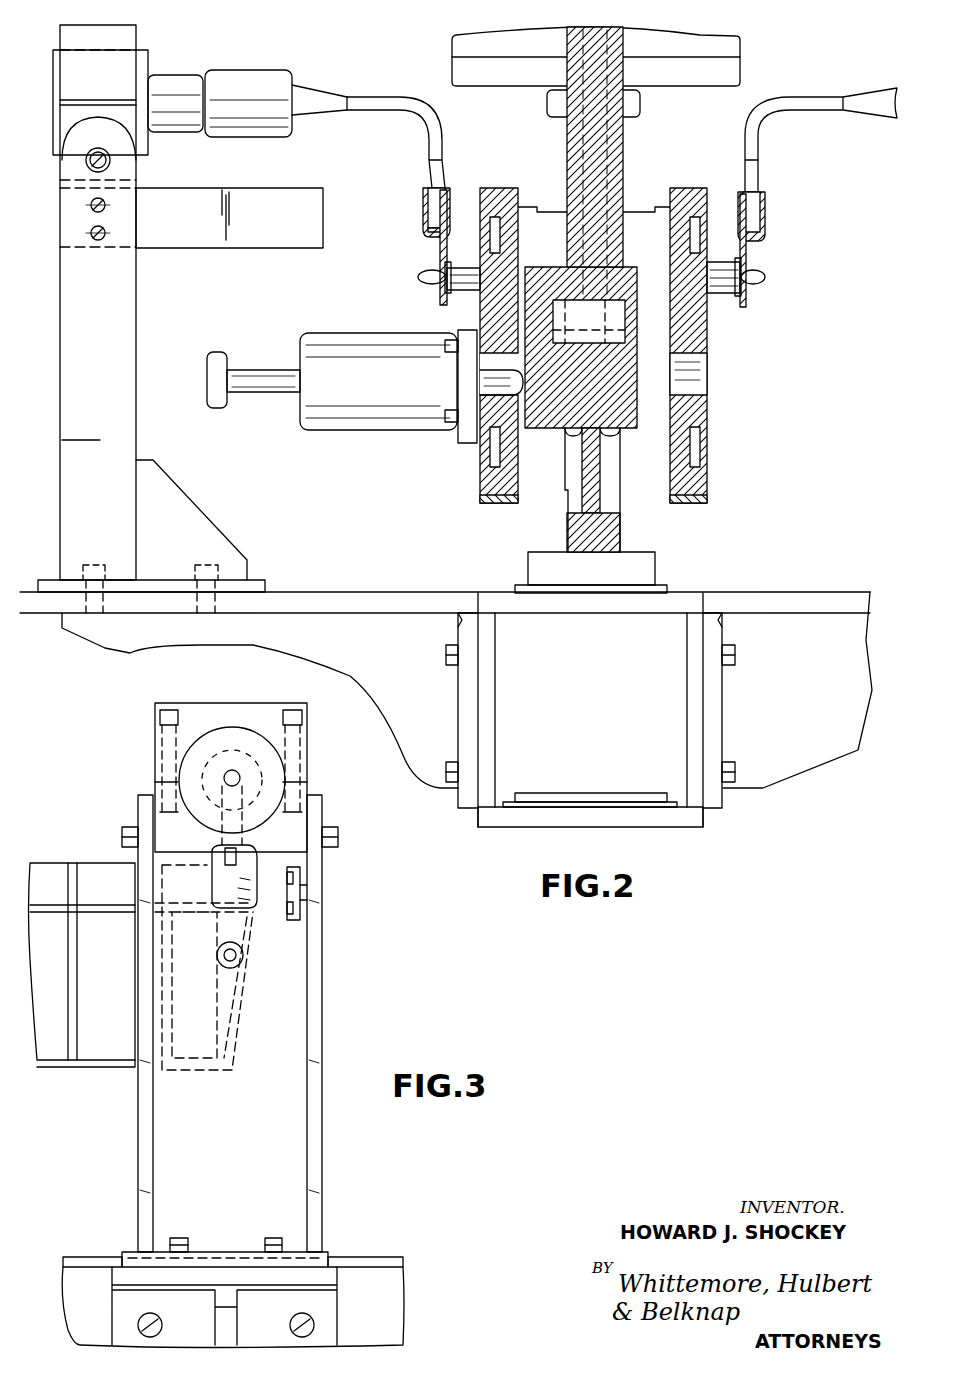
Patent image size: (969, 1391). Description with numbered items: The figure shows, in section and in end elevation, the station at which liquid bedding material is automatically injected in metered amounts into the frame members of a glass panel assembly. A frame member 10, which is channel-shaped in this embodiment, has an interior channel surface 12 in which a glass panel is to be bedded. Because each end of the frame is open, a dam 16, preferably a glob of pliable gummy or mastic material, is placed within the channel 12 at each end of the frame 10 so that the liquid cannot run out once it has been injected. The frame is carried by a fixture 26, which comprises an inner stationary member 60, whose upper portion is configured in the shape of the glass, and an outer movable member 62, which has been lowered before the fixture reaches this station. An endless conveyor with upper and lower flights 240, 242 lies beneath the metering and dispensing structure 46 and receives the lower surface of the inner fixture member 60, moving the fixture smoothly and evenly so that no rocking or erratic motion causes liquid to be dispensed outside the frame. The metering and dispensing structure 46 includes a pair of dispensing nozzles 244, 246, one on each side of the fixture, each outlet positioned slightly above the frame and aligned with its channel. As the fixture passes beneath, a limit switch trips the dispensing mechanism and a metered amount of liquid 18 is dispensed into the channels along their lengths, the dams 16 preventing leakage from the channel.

In FIG. 2, the frame member 10 is at (422, 194).
In FIG. 3, the frame member 10 is at (100, 1068).
In FIG. 2, the interior channel surface 12 is at (447, 194).
In FIG. 3, the dam 16 is at (254, 895).
In FIG. 2, the liquid 18 is at (426, 232).
In FIG. 2, the fixture 26 is at (556, 506).
In FIG. 2, the metering and dispensing structure 46 is at (305, 80).
In FIG. 3, the metering and dispensing structure 46 is at (235, 702).
In FIG. 2, the inner stationary member 60 is at (640, 553).
In FIG. 2, the outer movable member 62 is at (708, 447).
In FIG. 2, the upper flight 240 is at (664, 590).
In FIG. 2, the lower flight 242 is at (565, 793).
In FIG. 2, the dispensing nozzle 244 is at (438, 138).
In FIG. 3, the dispensing nozzle 244 is at (258, 862).
In FIG. 2, the dispensing nozzle 246 is at (760, 157).